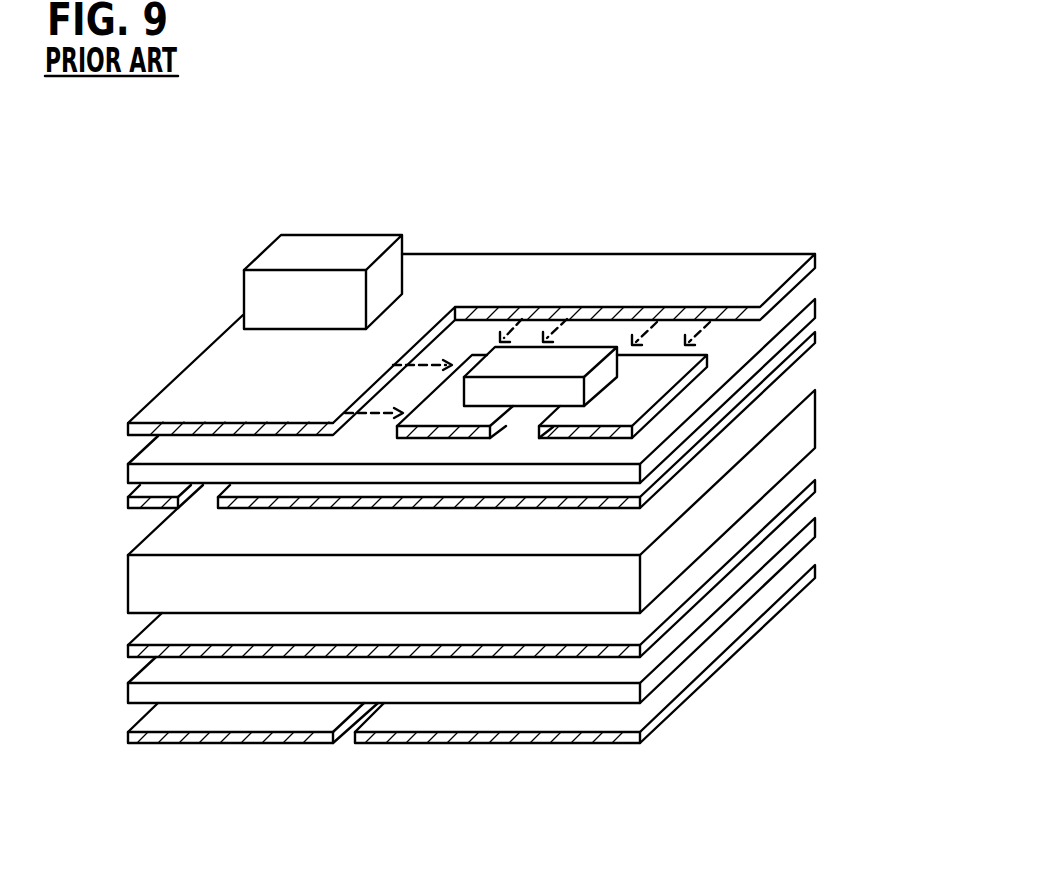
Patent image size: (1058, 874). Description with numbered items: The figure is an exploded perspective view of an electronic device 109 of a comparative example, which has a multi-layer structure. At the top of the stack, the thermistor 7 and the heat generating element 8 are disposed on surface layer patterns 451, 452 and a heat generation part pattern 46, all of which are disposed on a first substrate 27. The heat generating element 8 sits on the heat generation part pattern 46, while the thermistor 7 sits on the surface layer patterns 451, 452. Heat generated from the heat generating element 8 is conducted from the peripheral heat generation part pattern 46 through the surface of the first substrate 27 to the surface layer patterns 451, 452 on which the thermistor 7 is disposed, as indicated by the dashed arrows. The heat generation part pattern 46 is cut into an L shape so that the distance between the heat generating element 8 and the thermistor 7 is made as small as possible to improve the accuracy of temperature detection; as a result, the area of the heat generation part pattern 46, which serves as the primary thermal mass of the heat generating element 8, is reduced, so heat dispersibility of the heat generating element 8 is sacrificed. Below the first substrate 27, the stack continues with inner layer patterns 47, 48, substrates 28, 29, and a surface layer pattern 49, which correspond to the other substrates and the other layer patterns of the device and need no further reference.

The electronic device 109 is at (705, 162).
The heat generating element 8 is at (333, 250).
The thermistor 7 is at (580, 357).
The heat generation part pattern 46 is at (132, 426).
The surface layer pattern 451 is at (453, 395).
The surface layer pattern 452 is at (660, 365).
The first substrate 27 is at (132, 470).
The inner layer pattern 47 is at (132, 503).
The substrate 28 is at (133, 590).
The inner layer pattern 48 is at (132, 652).
The substrate 29 is at (133, 695).
The surface layer pattern 49 is at (132, 737).